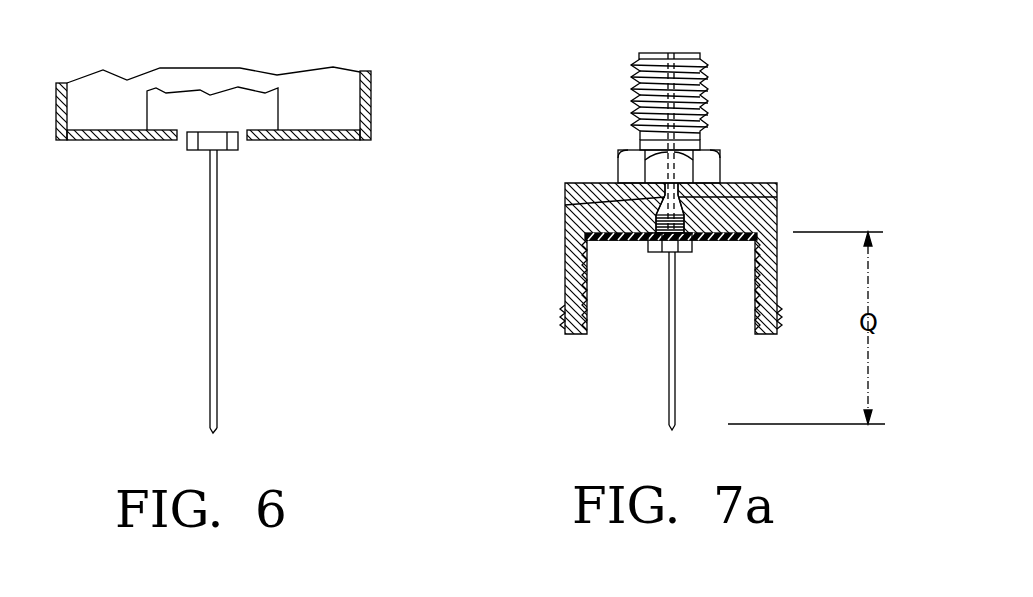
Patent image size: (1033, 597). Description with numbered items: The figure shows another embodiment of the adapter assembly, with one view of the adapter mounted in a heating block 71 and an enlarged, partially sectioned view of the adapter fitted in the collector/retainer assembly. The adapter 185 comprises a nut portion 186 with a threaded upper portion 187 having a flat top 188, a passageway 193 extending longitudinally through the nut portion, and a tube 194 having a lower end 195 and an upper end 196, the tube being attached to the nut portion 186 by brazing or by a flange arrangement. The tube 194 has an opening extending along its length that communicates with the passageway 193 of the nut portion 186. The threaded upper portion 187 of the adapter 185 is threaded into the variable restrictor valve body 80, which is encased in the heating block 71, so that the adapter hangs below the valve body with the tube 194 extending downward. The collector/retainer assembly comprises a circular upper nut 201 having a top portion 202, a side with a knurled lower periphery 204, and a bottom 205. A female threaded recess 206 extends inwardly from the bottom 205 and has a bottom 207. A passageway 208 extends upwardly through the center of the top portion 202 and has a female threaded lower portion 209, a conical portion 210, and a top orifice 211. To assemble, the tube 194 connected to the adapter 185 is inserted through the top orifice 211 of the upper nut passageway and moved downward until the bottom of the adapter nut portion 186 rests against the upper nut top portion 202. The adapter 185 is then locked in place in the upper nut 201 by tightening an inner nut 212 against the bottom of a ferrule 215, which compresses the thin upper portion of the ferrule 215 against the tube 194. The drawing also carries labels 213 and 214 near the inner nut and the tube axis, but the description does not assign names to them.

In FIG. 6, the heating block 71 is at (61, 82).
In FIG. 6, the variable restrictor valve body 80 is at (205, 98).
In FIG. 6, the adapter 185 is at (188, 161).
In FIG. 7a, the adapter 185 is at (608, 68).
In FIG. 6, the nut portion 186 is at (236, 145).
In FIG. 7a, the nut portion 186 is at (630, 150).
In FIG. 7a, the threaded upper portion 187 is at (708, 79).
In FIG. 7a, the flat top 188 is at (652, 52).
In FIG. 7a, the passageway 193 is at (716, 150).
In FIG. 7a, the tube 194 is at (667, 392).
In FIG. 6, the lower end 195 is at (211, 435).
In FIG. 7a, the lower end 195 is at (672, 431).
In FIG. 6, the upper end 196 is at (218, 153).
In FIG. 7a, the upper nut 201 is at (563, 212).
In FIG. 7a, the top portion 202 is at (763, 210).
In FIG. 7a, the knurled lower periphery 204 is at (565, 318).
In FIG. 7a, the bottom 205 is at (580, 336).
In FIG. 7a, the female threaded recess 206 is at (705, 336).
In FIG. 7a, the bottom 207 is at (585, 236).
In FIG. 7a, the passageway 208 is at (727, 183).
In FIG. 7a, the female threaded lower portion 209 is at (660, 226).
In FIG. 7a, the conical portion 210 is at (565, 205).
In FIG. 7a, the top orifice 211 is at (657, 183).
In FIG. 7a, the inner nut 212 is at (668, 253).
In FIG. 7a, the nut face 213 is at (692, 245).
In FIG. 7a, the needle axis 214 is at (682, 252).
In FIG. 7a, the ferrule 215 is at (775, 197).